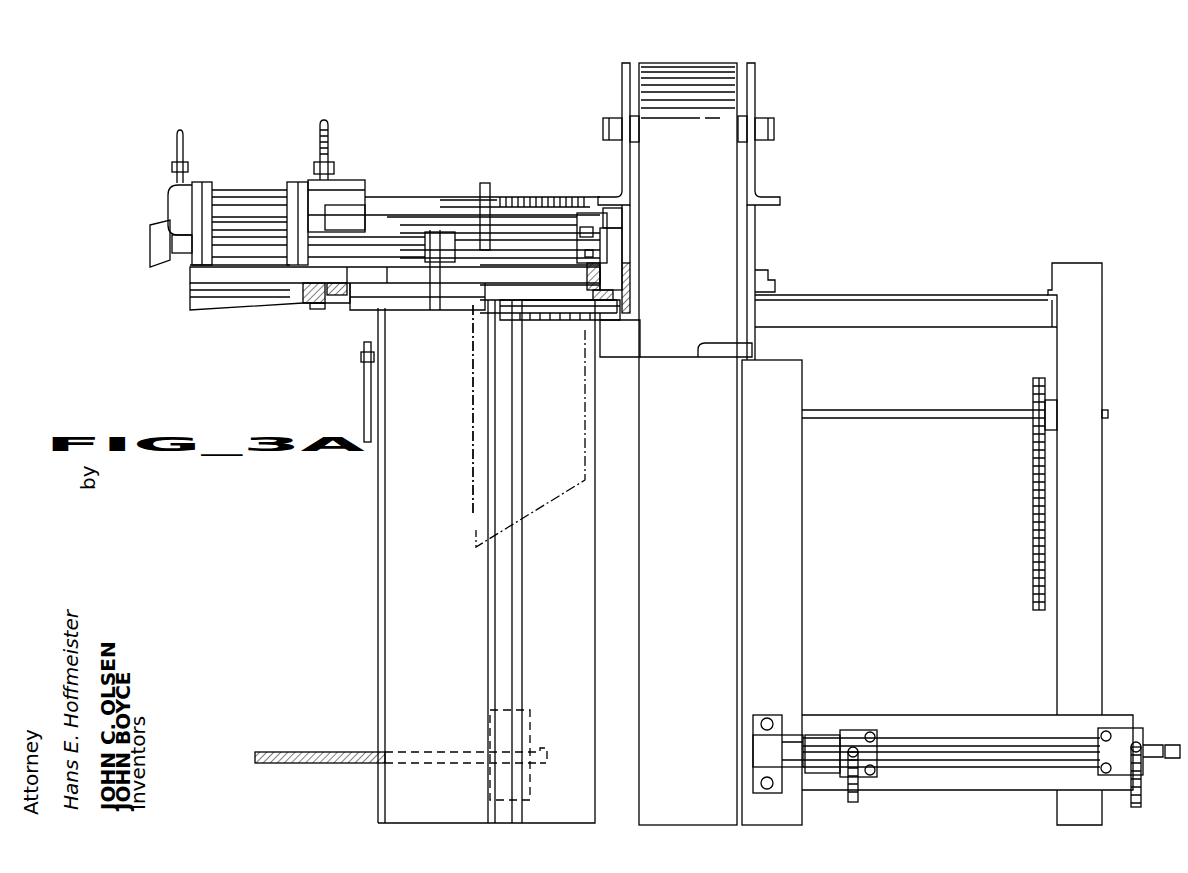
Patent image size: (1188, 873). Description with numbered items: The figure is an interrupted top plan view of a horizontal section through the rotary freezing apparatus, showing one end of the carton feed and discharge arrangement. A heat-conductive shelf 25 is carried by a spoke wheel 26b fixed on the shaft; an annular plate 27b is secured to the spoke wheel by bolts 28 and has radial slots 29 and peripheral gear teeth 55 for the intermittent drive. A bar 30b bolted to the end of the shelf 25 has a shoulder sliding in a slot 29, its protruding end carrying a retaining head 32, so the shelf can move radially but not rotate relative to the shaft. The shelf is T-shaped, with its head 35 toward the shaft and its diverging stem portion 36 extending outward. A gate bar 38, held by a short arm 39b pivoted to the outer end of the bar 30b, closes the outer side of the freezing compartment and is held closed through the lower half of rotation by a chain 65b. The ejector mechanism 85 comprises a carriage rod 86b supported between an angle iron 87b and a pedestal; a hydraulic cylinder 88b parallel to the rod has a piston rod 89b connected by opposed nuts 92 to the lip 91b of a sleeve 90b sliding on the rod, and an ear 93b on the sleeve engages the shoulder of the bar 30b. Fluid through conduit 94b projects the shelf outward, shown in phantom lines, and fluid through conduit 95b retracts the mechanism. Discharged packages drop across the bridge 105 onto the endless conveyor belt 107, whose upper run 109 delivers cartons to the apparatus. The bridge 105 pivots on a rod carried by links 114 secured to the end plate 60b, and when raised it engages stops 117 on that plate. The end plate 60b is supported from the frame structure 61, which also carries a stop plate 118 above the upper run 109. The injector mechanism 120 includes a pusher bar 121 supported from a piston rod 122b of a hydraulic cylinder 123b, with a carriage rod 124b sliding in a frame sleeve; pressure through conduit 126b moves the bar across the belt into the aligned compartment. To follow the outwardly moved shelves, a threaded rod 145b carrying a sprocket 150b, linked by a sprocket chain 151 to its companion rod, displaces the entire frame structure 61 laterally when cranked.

The shelf 25 is at (475, 520).
The spoke wheel 26b is at (228, 302).
The annular plate 27b is at (341, 298).
The bolt 28 is at (317, 307).
The radial slot 29 is at (380, 292).
The bar 30b is at (412, 310).
The retaining head 32 is at (372, 268).
The head 35 is at (473, 468).
The stem portion 36 is at (566, 456).
The gate bar 38 is at (503, 588).
The short arm 39b is at (505, 314).
The gear teeth 55 is at (608, 270).
The end plate 60b is at (606, 298).
The frame structure 61 is at (772, 306).
The chain 65b is at (306, 734).
The ejector mechanism 85 is at (374, 180).
The carriage rod 86b is at (528, 240).
The angle iron 87b is at (601, 247).
The hydraulic cylinder 88b is at (243, 200).
The piston rod 89b is at (446, 203).
The sleeve 90b is at (438, 232).
The lip 91b is at (515, 197).
The nut 92 is at (487, 223).
The ear 93b is at (452, 282).
The conduit 94b is at (177, 150).
The conduit 95b is at (326, 132).
The bridge 105 is at (575, 625).
The endless conveyor belt 107 is at (714, 494).
The upper run 109 is at (702, 536).
The link 114 is at (630, 352).
The stop 117 is at (546, 308).
The stop plate 118 is at (706, 344).
The injector mechanism 120 is at (986, 694).
The pusher bar 121 is at (782, 600).
The piston rod 122b is at (802, 742).
The hydraulic cylinder 123b is at (930, 758).
The carriage rod 124b is at (1146, 745).
The conduit 126b is at (1133, 800).
The rod 145b is at (921, 413).
The sprocket 150b is at (1053, 412).
The sprocket chain 151 is at (1033, 546).